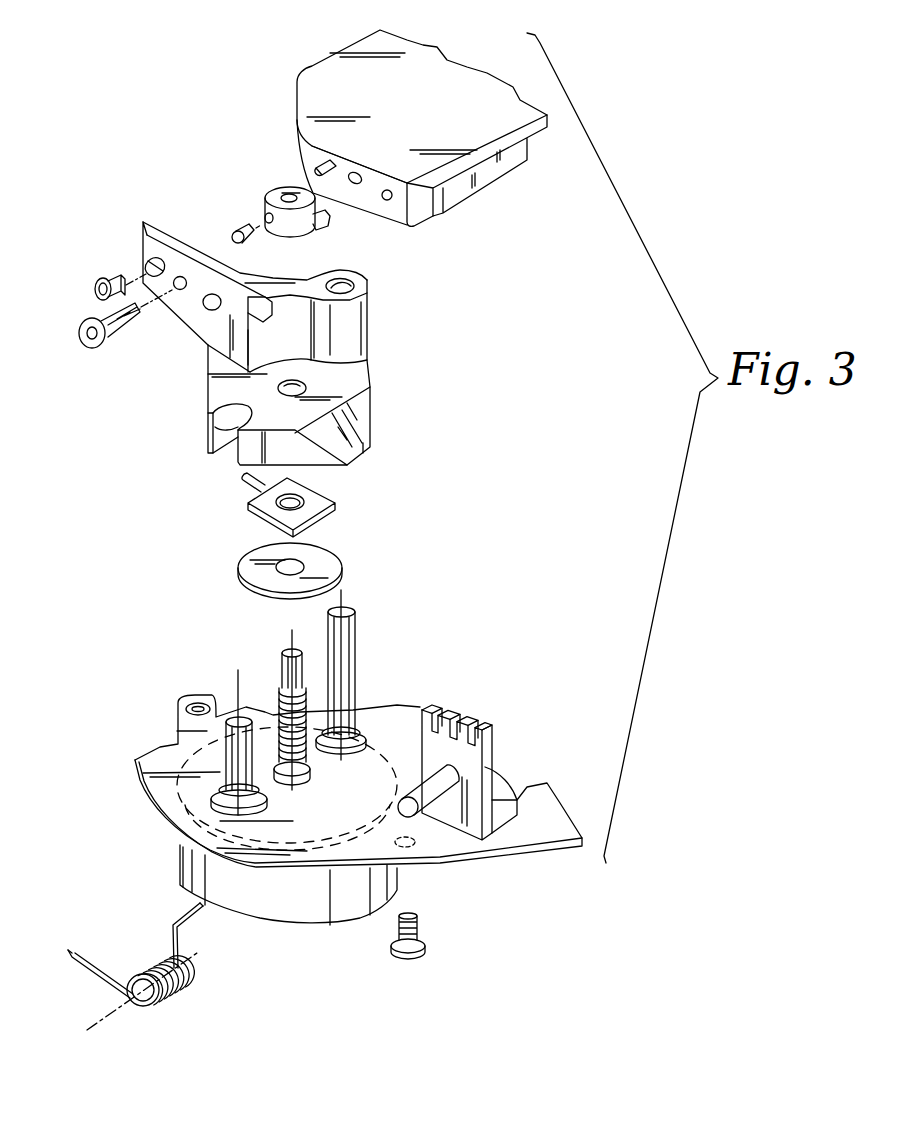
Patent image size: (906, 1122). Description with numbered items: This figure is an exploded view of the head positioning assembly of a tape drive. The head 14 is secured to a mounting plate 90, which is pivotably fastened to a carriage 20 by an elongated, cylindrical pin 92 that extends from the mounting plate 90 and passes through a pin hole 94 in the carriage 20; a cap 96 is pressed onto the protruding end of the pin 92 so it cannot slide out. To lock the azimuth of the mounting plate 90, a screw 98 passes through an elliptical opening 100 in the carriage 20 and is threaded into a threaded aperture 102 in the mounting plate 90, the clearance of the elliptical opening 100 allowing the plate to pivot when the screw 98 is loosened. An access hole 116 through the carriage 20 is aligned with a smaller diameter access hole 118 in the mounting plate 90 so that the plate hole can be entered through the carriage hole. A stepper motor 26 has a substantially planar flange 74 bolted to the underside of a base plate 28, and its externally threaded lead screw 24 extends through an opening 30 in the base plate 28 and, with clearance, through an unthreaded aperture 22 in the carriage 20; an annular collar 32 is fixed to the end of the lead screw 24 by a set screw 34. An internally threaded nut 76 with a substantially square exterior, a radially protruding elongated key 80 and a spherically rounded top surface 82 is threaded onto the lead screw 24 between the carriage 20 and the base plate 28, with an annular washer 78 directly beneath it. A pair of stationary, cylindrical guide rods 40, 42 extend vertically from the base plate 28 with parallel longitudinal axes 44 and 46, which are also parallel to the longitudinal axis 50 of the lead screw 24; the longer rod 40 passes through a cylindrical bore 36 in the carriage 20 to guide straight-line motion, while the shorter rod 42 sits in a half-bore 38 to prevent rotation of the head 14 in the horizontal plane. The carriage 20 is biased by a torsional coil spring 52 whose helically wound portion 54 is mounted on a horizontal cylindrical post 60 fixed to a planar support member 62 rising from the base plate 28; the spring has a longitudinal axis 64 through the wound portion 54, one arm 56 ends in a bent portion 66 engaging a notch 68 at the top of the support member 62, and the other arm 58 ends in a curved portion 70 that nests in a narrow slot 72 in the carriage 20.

The head 14 is at (386, 148).
The mounting plate 90 is at (323, 68).
The pin 92 is at (314, 164).
The threaded aperture 102 is at (355, 184).
The access hole 118 is at (387, 201).
The annular collar 32 is at (282, 185).
The set screw 34 is at (247, 230).
The pin hole 94 is at (148, 263).
The cap 96 is at (93, 287).
The screw 98 is at (100, 348).
The elliptical opening 100 is at (178, 291).
The access hole 116 is at (208, 312).
The carriage 20 is at (292, 345).
The cylindrical bore 36 is at (356, 286).
The unthreaded aperture 22 is at (306, 388).
The half-bore 38 is at (220, 427).
The narrow slot 72 is at (352, 428).
The internally threaded nut 76 is at (298, 507).
The elongated key 80 is at (246, 484).
The spherically rounded top surface 82 is at (316, 498).
The annular washer 78 is at (252, 568).
The guide rod 40 is at (373, 662).
The longitudinal axis 44 is at (344, 588).
The guide rod 42 is at (177, 737).
The longitudinal axis 46 is at (236, 686).
The longitudinal axis 50 is at (288, 715).
The opening 30 is at (302, 779).
The lead screw 24 is at (298, 750).
The flange 74 is at (182, 723).
The base plate 28 is at (344, 837).
The stepper motor 26 is at (313, 920).
The support member 62 is at (474, 777).
The notch 68 is at (450, 710).
The cylindrical post 60 is at (430, 815).
The torsional coil spring 52 is at (145, 975).
The helically wound portion 54 is at (163, 990).
The arm 56 is at (156, 924).
The bent portion 66 is at (194, 910).
The arm 58 is at (78, 993).
The curved portion 70 is at (73, 958).
The longitudinal axis 64 is at (102, 1027).